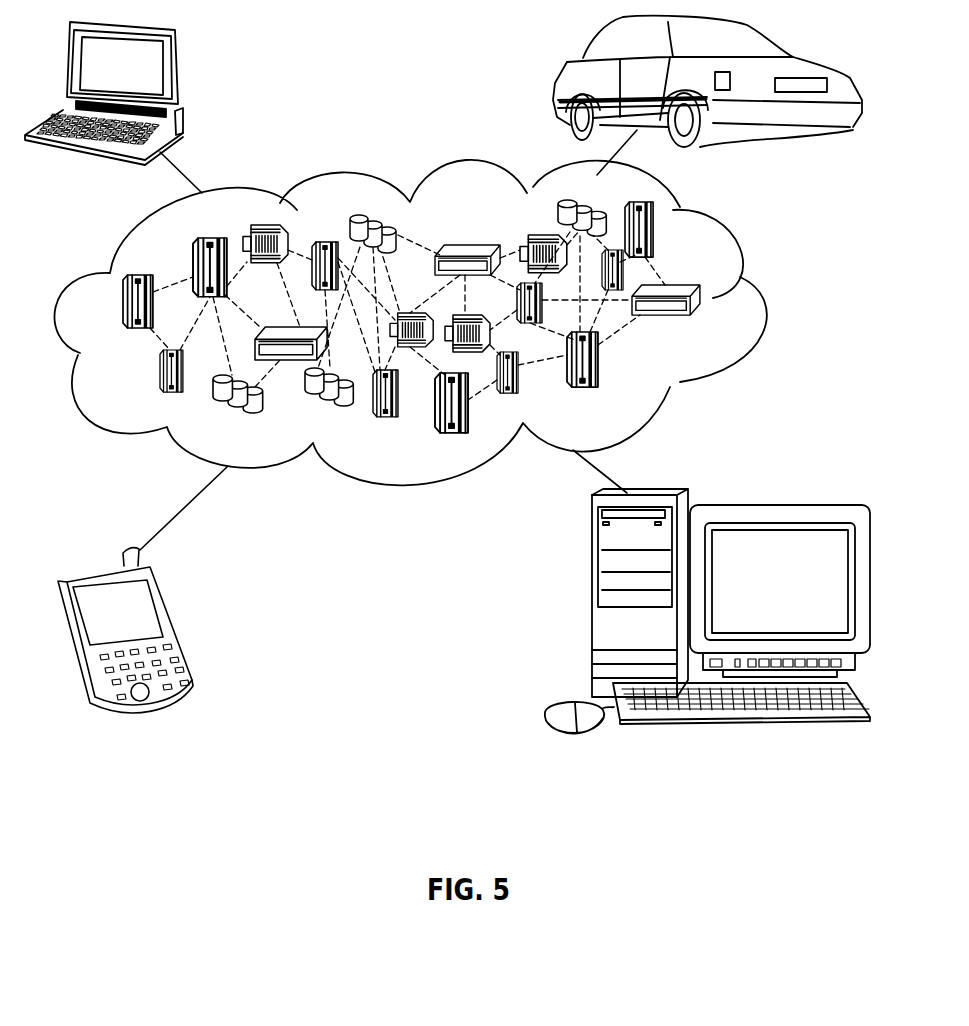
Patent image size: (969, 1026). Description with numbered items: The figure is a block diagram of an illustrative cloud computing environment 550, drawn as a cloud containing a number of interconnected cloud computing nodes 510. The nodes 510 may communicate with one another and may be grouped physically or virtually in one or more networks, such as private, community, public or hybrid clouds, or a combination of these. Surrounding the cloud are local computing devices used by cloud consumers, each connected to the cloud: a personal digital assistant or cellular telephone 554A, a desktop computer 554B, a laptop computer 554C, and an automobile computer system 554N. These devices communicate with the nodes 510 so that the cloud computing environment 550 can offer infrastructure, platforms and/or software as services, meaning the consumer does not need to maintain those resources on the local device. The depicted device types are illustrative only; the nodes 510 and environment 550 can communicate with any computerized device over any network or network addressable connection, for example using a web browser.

The cloud computing nodes 510 is at (720, 320).
The cloud computing environment 550 is at (743, 262).
The personal digital assistant or cellular telephone 554A is at (175, 623).
The desktop computer 554B is at (590, 603).
The laptop computer 554C is at (180, 70).
The automobile computer system 554N is at (560, 74).